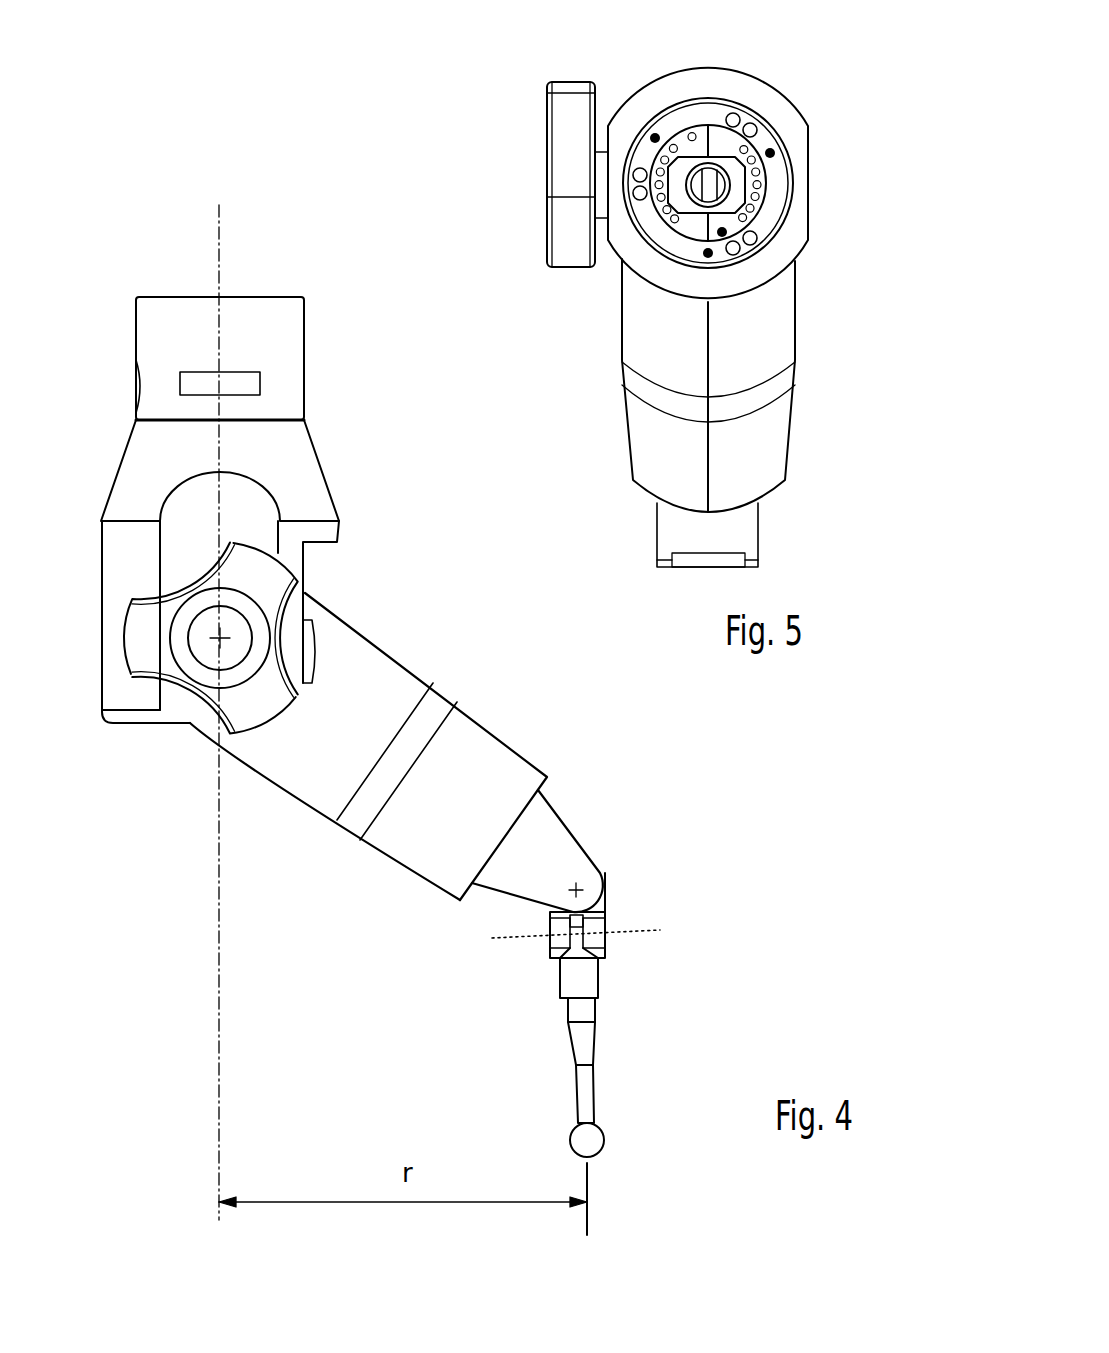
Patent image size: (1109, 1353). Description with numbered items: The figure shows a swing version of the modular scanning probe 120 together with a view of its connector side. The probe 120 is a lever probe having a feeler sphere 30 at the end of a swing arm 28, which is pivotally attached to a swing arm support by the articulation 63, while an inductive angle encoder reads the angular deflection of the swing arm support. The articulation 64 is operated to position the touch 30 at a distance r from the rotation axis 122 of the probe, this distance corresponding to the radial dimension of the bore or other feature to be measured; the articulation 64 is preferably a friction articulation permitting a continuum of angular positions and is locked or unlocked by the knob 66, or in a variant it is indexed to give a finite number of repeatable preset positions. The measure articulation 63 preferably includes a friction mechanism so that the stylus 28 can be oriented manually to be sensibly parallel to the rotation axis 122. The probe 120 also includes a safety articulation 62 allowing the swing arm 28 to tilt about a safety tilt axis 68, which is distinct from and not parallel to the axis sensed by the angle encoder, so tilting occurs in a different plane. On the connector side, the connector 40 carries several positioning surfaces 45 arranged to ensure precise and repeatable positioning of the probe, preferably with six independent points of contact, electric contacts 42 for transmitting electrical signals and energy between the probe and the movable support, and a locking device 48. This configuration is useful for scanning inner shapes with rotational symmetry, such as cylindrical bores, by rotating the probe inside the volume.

In FIG. 4, the swing arm 28 is at (595, 1060).
In FIG. 4, the feeler sphere 30 is at (603, 1147).
In FIG. 5, the connector 40 is at (662, 102).
In FIG. 5, the electric contacts 42 is at (758, 197).
In FIG. 5, the positioning surfaces 45 is at (751, 123).
In FIG. 5, the locking device 48 is at (697, 202).
In FIG. 4, the safety articulation 62 is at (605, 927).
In FIG. 4, the articulation 63 is at (603, 870).
In FIG. 4, the articulation 64 is at (190, 723).
In FIG. 4, the knob 66 is at (178, 638).
In FIG. 4, the safety tilt axis 68 is at (622, 933).
In FIG. 4, the probe 120 is at (417, 635).
In FIG. 4, the rotation axis 122 is at (220, 952).